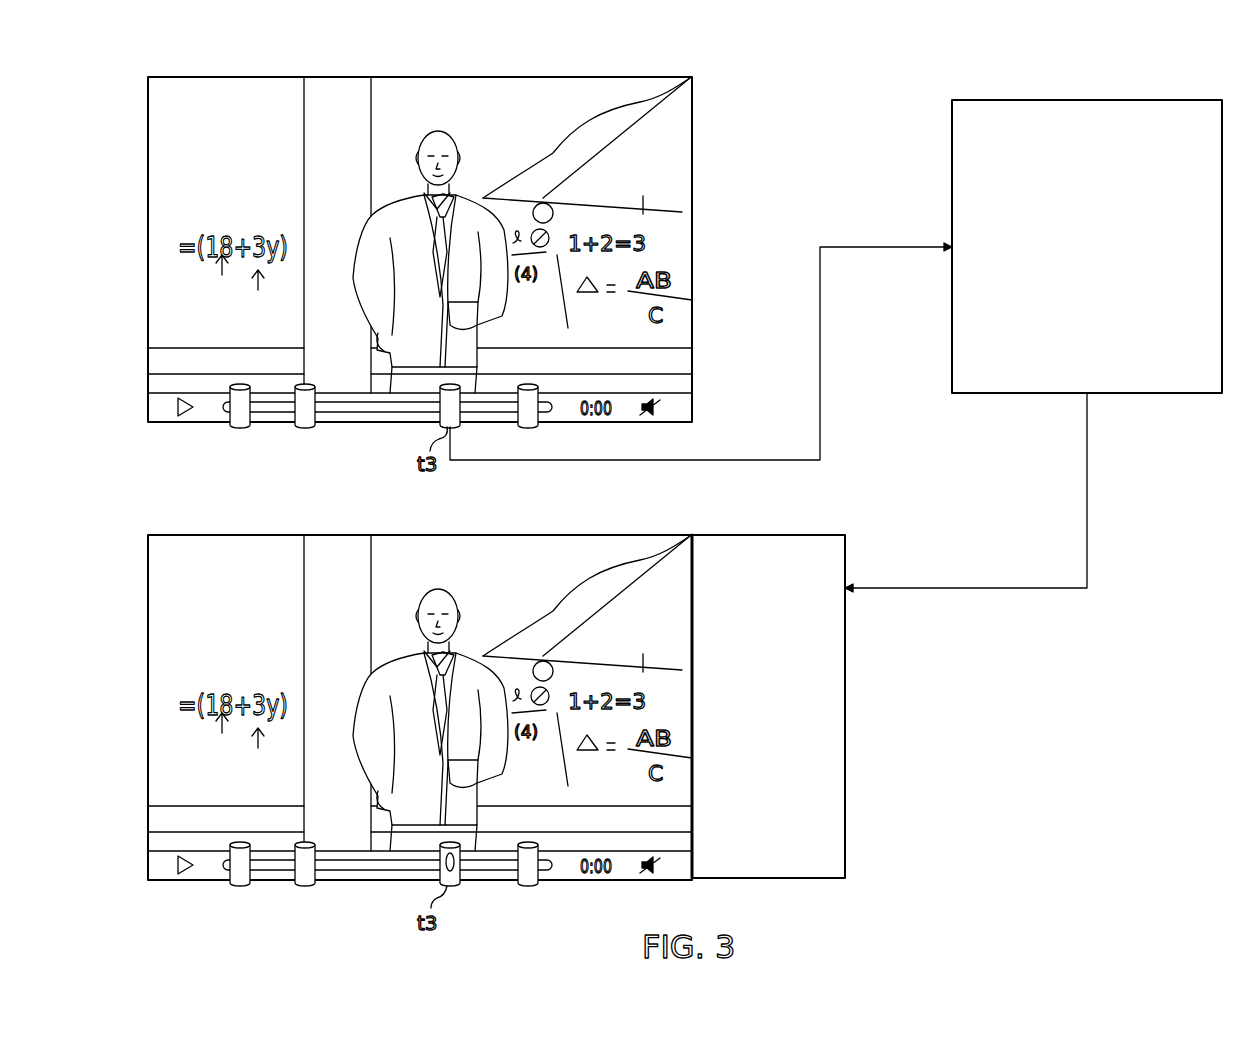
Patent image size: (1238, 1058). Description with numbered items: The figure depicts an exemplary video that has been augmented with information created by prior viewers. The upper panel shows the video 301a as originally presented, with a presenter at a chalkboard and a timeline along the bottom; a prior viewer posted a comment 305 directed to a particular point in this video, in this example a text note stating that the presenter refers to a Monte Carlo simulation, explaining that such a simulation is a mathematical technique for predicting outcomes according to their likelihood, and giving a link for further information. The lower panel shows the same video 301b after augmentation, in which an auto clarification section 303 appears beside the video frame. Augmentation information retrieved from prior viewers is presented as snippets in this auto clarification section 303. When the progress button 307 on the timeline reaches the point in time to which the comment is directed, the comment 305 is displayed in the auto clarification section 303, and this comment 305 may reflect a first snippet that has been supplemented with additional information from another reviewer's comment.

The video 301a is at (220, 98).
The video 301b is at (220, 556).
The auto clarification section 303 is at (744, 762).
The comment 305 is at (993, 397).
The progress button 307 is at (454, 886).